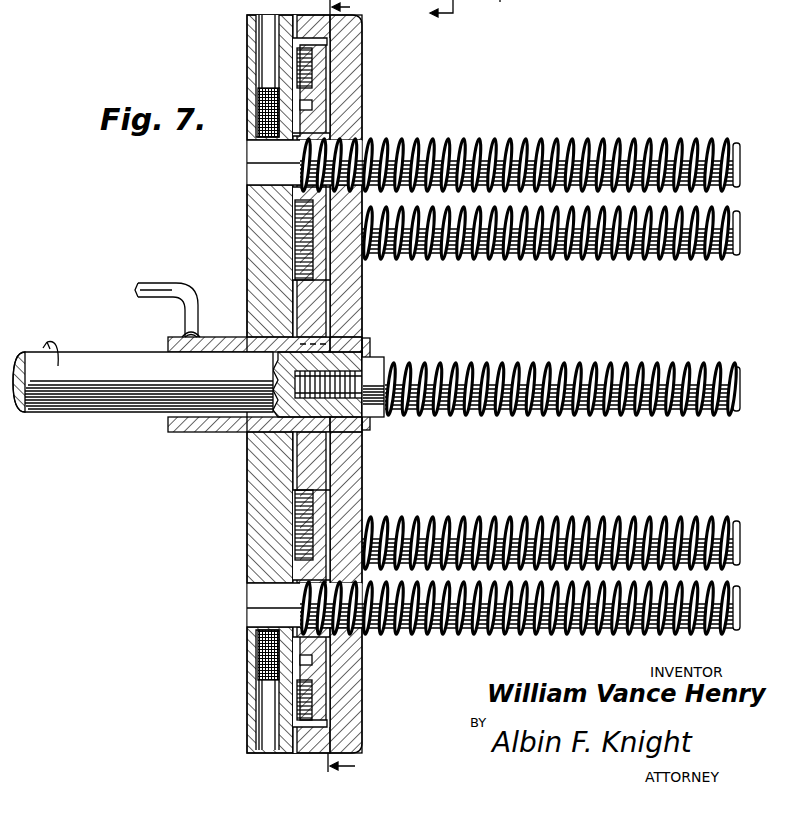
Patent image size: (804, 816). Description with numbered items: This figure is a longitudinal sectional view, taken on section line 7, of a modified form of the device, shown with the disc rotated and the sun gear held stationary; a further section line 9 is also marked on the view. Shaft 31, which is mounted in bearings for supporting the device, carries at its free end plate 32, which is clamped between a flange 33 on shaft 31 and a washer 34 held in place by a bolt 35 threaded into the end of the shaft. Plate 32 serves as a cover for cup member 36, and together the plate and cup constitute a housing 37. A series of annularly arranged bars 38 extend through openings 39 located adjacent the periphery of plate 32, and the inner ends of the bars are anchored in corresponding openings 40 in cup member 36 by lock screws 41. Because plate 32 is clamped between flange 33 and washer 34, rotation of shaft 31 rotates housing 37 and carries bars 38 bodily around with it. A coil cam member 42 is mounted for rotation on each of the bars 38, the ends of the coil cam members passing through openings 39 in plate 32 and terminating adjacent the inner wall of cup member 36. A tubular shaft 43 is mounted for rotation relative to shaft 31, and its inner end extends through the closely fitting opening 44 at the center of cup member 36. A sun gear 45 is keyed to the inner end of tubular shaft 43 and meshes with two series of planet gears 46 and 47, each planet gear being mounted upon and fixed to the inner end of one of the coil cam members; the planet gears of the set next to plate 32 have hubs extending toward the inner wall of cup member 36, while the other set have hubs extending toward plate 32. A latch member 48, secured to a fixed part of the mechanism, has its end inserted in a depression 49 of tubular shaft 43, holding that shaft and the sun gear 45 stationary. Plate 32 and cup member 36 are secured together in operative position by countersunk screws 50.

The shaft 31 is at (103, 412).
The plate 32 is at (360, 312).
The flange 33 is at (342, 345).
The washer 34 is at (370, 428).
The bolt 35 is at (380, 365).
The cup member 36 is at (247, 238).
The housing 37 is at (246, 549).
The bars 38 is at (578, 137).
The openings 39 is at (363, 128).
The openings 40 is at (247, 163).
The lock screws 41 is at (257, 100).
The coil cam member 42 is at (535, 137).
The tubular shaft 43 is at (186, 432).
The opening 44 is at (260, 433).
The sun gear 45 is at (322, 292).
The planet gears 46 is at (330, 112).
The planet gears 47 is at (300, 252).
The latch member 48 is at (197, 270).
The depression 49 is at (200, 336).
The countersunk screws 50 is at (508, 10).
The section line 7 is at (391, 12).
The section line 9 is at (334, 772).